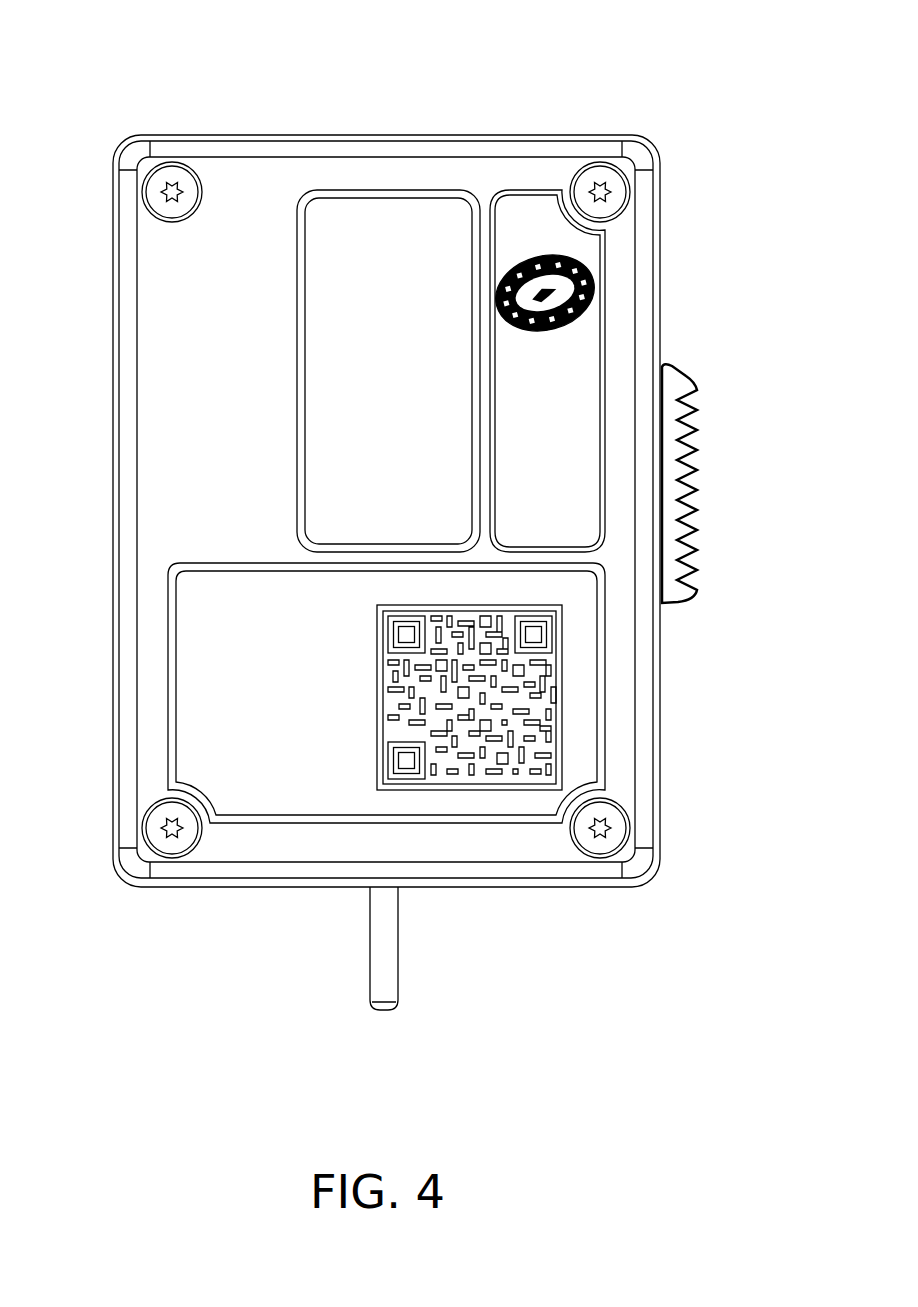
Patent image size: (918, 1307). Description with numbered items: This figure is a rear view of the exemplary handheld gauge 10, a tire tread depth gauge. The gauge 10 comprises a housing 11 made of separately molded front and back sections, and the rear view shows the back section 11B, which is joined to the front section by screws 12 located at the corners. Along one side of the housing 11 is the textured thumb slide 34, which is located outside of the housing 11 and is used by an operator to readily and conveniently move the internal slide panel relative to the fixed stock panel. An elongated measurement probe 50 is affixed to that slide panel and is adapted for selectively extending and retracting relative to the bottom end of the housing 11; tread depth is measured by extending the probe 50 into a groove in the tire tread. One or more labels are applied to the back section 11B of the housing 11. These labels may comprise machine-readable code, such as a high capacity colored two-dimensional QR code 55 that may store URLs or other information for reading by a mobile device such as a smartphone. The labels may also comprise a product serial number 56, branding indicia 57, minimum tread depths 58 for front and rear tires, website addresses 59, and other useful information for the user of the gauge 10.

The handheld gauge 10 is at (702, 146).
The housing 11 is at (278, 135).
The back section 11B is at (150, 390).
The screws 12 is at (172, 163).
The textured thumb slide 34 is at (690, 440).
The measurement probe 50 is at (398, 925).
The QR code 55 is at (562, 688).
The product serial number 56 is at (350, 345).
The branding indicia 57 is at (573, 322).
The minimum tread depths 58 is at (282, 578).
The website addresses 59 is at (205, 632).